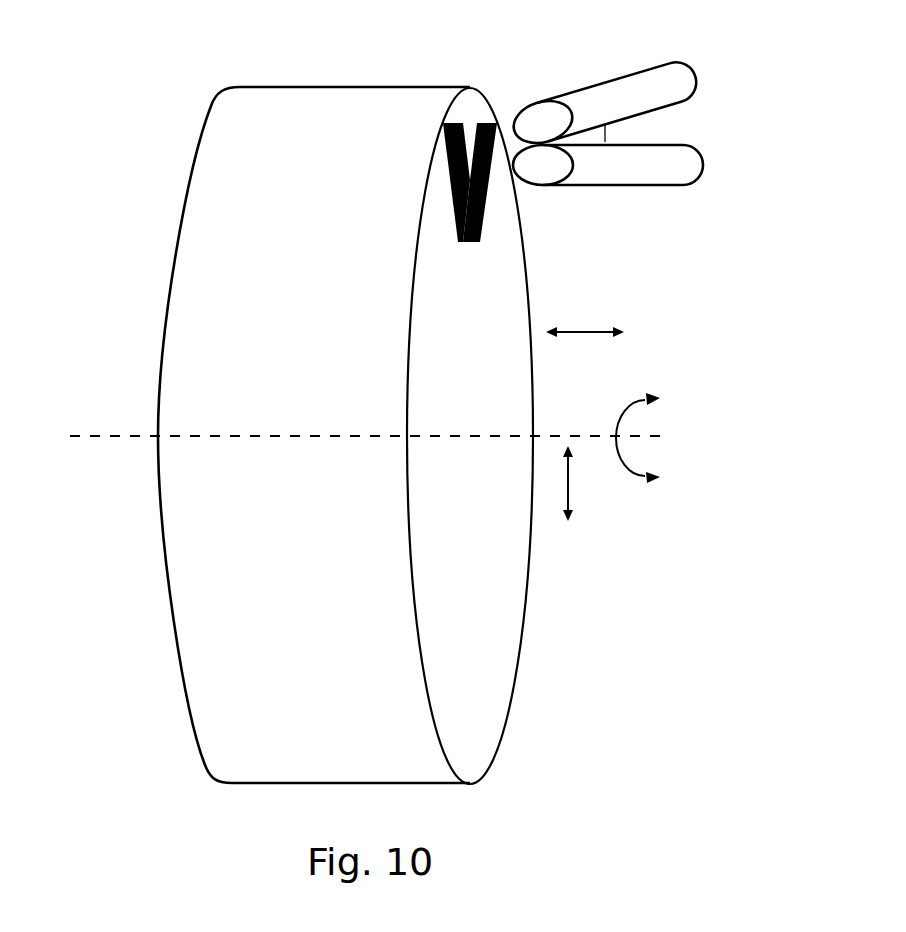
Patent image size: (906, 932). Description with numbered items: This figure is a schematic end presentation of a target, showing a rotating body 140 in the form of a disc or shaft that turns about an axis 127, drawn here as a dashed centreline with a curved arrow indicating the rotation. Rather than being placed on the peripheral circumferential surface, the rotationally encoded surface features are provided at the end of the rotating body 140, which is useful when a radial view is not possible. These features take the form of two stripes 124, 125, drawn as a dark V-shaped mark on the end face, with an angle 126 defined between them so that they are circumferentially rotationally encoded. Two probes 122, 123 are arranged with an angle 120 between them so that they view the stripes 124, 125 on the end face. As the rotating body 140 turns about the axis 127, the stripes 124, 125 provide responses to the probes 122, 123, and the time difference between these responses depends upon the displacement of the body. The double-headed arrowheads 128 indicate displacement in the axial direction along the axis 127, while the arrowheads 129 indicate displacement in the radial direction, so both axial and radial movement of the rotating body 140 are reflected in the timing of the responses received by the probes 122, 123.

The angle 120 is at (651, 131).
The probe 122 is at (636, 82).
The probe 123 is at (668, 175).
The stripe 124 is at (447, 119).
The stripe 125 is at (489, 120).
The angle 126 is at (492, 172).
The axis 127 is at (135, 433).
The arrowheads 128 is at (585, 332).
The arrowheads 129 is at (568, 482).
The rotating body 140 is at (507, 658).